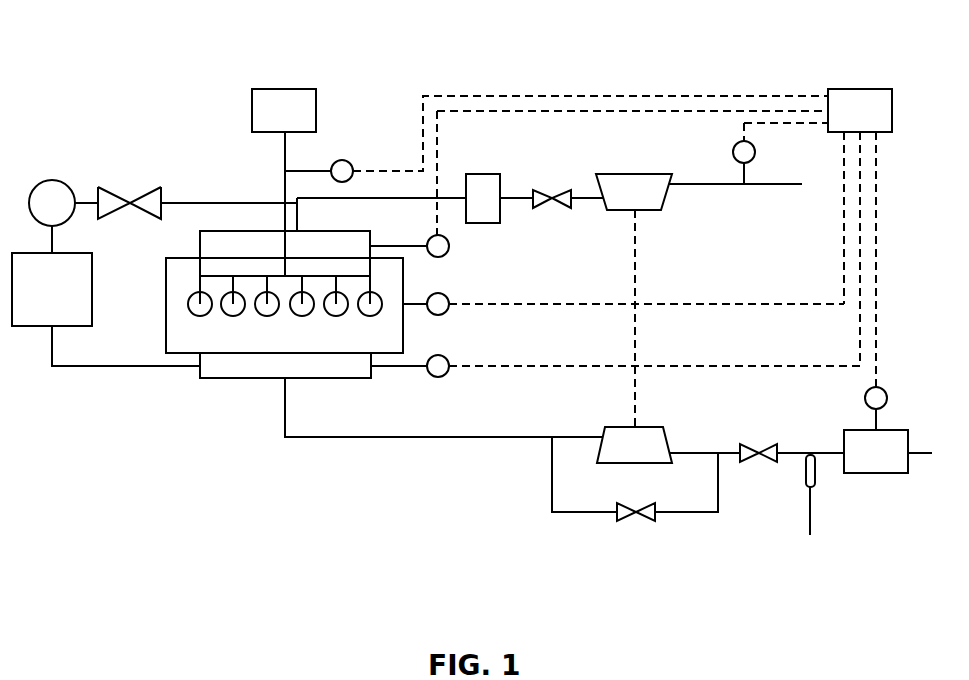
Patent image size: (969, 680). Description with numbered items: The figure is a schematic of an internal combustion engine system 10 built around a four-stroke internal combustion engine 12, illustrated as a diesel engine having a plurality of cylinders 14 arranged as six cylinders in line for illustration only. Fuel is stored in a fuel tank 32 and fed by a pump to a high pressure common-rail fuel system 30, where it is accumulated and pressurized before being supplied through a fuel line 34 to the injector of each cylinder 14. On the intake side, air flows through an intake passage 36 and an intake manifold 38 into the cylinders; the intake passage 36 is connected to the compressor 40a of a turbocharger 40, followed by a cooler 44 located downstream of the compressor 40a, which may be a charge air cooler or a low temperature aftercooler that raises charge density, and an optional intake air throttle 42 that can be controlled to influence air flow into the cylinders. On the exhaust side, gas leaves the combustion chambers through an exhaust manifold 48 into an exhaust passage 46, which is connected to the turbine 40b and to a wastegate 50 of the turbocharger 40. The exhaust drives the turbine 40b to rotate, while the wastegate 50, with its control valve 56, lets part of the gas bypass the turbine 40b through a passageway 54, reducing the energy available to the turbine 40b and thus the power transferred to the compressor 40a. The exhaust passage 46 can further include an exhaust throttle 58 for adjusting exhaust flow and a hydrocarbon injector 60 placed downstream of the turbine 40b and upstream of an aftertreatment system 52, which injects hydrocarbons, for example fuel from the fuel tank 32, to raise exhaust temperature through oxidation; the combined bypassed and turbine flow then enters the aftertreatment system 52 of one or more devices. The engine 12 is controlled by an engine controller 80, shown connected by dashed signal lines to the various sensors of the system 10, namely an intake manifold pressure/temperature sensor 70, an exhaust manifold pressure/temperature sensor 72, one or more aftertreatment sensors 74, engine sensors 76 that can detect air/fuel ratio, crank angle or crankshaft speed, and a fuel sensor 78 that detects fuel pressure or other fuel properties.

The system 10 is at (420, 44).
The internal combustion engine 12 is at (158, 345).
The cylinders 14 is at (187, 304).
The high pressure common-rail fuel system 30 is at (243, 262).
The fuel tank 32 is at (284, 182).
The fuel line 34 is at (200, 282).
The intake passage 36 is at (716, 185).
The intake manifold 38 is at (262, 230).
The turbocharger 40 is at (668, 266).
The compressor 40a is at (630, 173).
The turbine 40b is at (603, 433).
The intake air throttle 42 is at (560, 206).
The cooler 44 is at (483, 174).
The exhaust passage 46 is at (332, 439).
The exhaust manifold 48 is at (230, 371).
The wastegate 50 is at (572, 520).
The aftertreatment system 52 is at (888, 451).
The passageway 54 is at (690, 513).
The control valve 56 is at (625, 521).
The exhaust throttle 58 is at (750, 444).
The hydrocarbon injector 60 is at (805, 476).
The intake manifold pressure/temperature sensor 70 is at (438, 257).
The exhaust manifold pressure/temperature sensor 72 is at (438, 377).
The aftertreatment sensors 74 is at (887, 396).
The engine sensors 76 is at (438, 315).
The fuel sensor 78 is at (342, 160).
The engine controller 80 is at (664, 238).